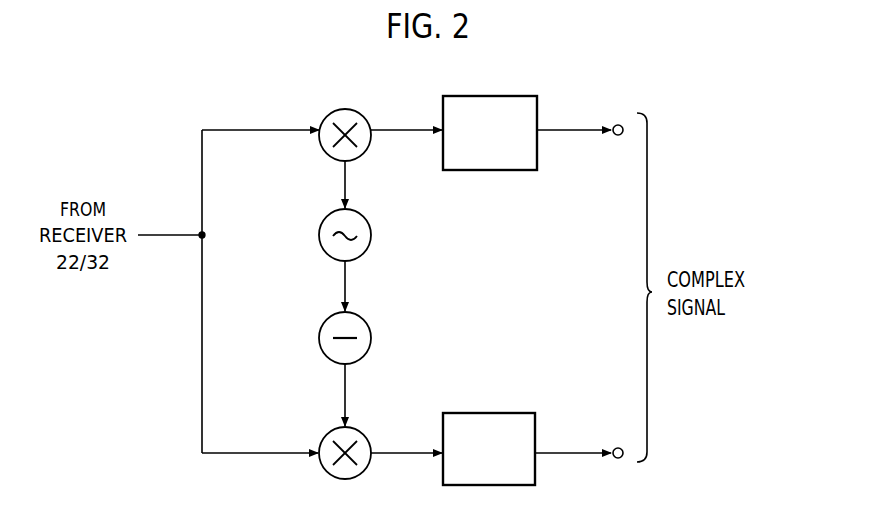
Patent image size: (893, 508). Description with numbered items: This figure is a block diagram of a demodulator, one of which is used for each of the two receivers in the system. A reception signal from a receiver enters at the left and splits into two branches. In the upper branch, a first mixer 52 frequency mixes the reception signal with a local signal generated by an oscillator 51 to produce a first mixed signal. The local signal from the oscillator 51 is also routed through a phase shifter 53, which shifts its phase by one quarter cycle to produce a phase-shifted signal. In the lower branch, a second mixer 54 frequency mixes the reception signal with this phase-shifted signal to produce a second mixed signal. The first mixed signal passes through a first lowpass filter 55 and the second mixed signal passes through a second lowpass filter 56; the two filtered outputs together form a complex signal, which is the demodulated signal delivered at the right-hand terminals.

The oscillator 51 is at (368, 218).
The first mixer 52 is at (364, 117).
The phase shifter 53 is at (368, 322).
The second mixer 54 is at (364, 433).
The first lowpass filter 55 is at (508, 96).
The second lowpass filter 56 is at (505, 413).